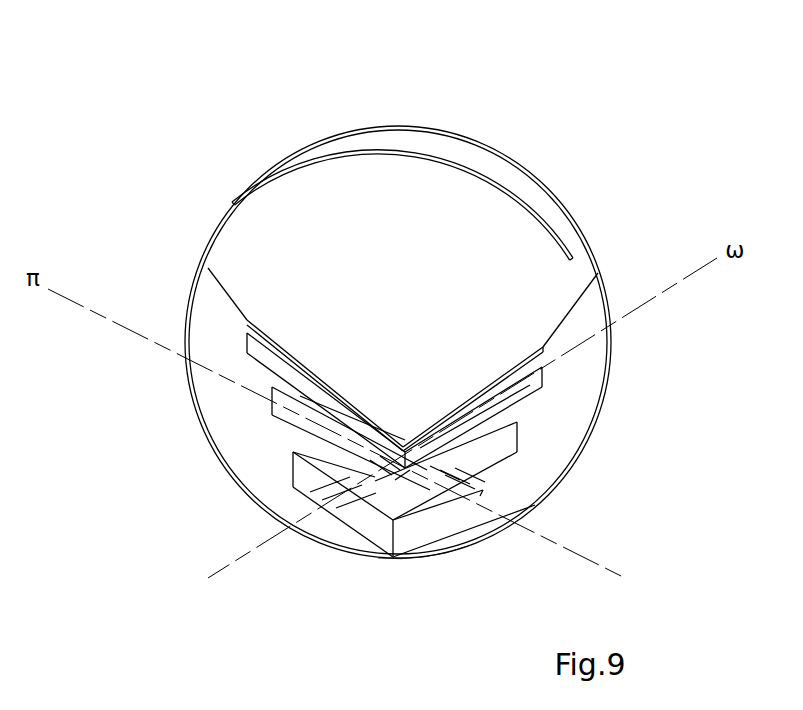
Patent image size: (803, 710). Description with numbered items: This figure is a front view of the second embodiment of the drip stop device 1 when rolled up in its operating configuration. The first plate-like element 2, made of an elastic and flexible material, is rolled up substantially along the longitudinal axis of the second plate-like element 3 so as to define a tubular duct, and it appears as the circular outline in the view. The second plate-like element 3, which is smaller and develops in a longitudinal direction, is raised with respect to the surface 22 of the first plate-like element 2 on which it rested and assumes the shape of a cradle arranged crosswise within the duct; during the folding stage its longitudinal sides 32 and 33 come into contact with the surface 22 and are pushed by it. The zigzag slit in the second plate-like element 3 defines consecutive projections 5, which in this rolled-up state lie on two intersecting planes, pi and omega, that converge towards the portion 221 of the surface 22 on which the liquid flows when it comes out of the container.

The drip stop device 1 is at (708, 70).
The first plate-like element 2 is at (560, 199).
The surface 22 is at (390, 158).
The portion 221 is at (440, 575).
The second plate-like element 3 is at (360, 545).
The projections 5 is at (302, 442).
The longitudinal side 32 is at (596, 276).
The longitudinal side 33 is at (208, 268).